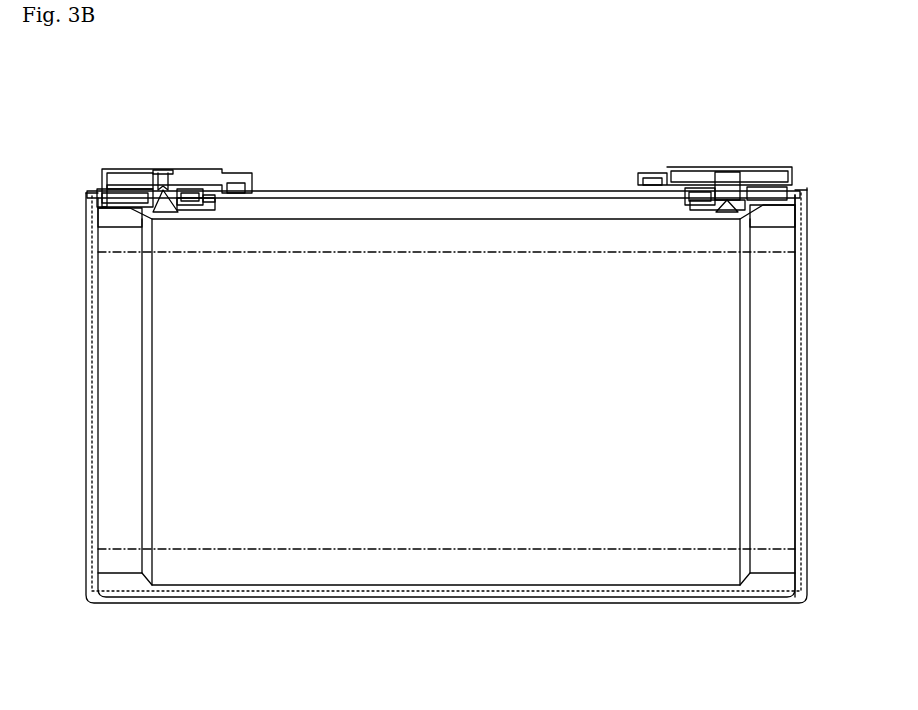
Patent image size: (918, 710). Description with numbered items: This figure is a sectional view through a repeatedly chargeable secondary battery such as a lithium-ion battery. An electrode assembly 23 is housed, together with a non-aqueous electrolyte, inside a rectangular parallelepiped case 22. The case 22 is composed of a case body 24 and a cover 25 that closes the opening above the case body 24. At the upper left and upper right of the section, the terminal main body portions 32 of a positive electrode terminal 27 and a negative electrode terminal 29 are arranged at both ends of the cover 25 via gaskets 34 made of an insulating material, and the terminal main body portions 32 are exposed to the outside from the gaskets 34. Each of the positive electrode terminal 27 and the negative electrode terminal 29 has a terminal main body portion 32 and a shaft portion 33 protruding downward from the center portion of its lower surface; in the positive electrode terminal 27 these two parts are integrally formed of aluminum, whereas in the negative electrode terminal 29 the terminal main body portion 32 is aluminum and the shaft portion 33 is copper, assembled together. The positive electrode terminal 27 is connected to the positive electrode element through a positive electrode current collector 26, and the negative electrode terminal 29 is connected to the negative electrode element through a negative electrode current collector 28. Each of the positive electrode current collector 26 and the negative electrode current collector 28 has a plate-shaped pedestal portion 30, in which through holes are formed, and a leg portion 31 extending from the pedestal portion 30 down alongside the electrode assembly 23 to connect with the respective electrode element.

The case 22 is at (415, 139).
The electrode assembly 23 is at (405, 517).
The case body 24 is at (82, 214).
The cover 25 is at (97, 208).
The positive electrode current collector 26 is at (112, 392).
The positive electrode terminal 27 is at (133, 169).
The negative electrode current collector 28 is at (783, 413).
The negative electrode terminal 29 is at (768, 165).
The pedestal portion 30 is at (185, 213).
The leg portion 31 is at (137, 443).
The terminal main body portion 32 is at (197, 175).
The shaft portion 33 is at (157, 203).
The gasket 34 is at (242, 168).